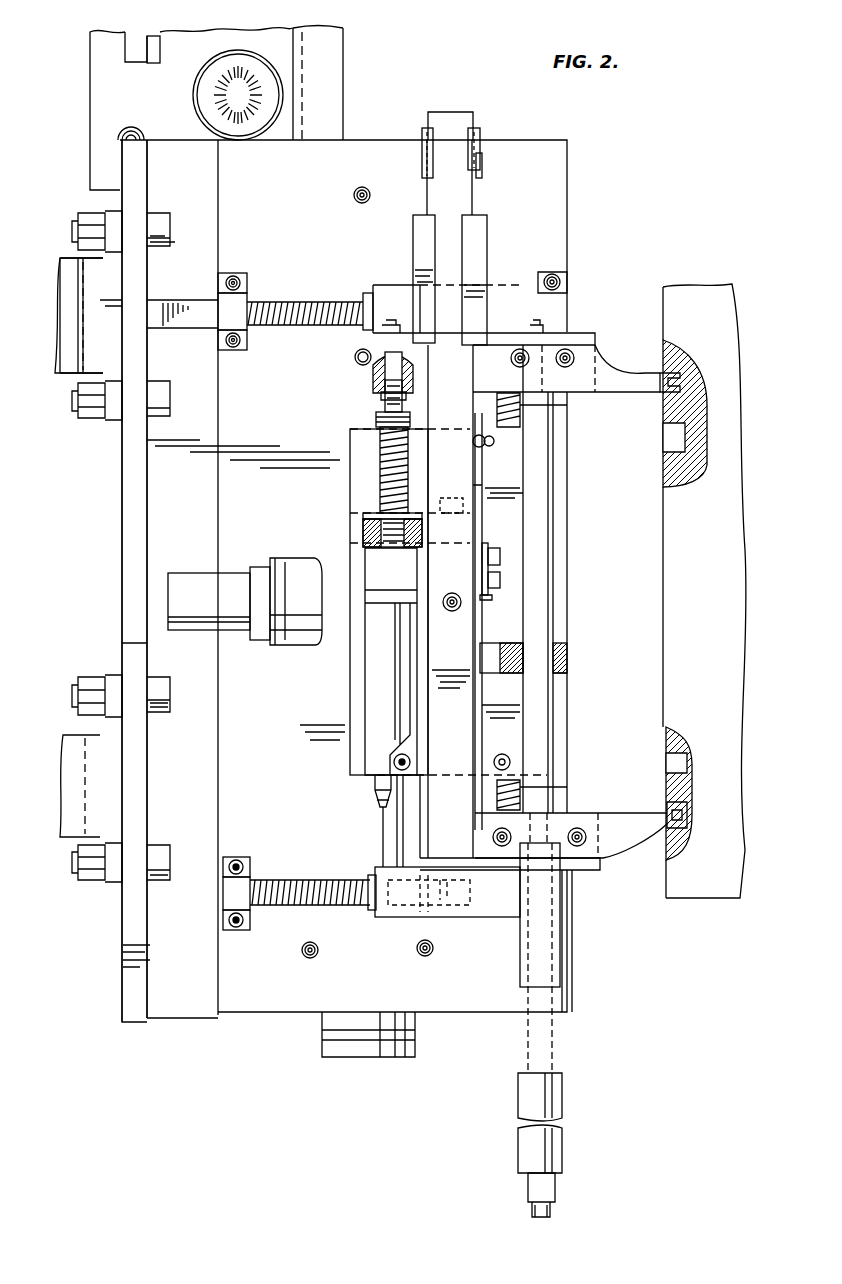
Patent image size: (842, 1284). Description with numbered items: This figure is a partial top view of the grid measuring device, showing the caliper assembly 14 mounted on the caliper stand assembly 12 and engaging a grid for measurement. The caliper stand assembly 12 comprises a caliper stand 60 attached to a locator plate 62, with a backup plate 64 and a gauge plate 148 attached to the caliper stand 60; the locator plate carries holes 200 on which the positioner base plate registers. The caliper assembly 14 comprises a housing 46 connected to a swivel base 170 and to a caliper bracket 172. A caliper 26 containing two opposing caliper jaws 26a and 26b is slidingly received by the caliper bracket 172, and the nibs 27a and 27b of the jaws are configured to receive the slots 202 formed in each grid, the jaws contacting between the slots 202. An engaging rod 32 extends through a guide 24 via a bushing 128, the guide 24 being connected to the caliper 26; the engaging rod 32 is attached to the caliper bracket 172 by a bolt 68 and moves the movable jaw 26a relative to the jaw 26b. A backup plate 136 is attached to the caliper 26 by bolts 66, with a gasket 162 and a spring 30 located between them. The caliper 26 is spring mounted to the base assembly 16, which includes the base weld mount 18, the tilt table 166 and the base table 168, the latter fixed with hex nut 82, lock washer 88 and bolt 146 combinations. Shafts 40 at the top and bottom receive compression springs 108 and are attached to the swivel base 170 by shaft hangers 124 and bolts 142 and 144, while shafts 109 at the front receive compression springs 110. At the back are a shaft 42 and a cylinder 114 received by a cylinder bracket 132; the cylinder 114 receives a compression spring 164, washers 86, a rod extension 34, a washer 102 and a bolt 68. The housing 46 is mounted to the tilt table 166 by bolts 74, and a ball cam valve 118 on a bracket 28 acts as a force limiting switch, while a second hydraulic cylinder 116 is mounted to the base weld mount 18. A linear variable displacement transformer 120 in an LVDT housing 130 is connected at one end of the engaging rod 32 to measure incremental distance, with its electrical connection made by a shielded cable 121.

The caliper stand assembly 12 is at (366, 50).
The caliper assembly 14 is at (622, 629).
The base assembly 16 is at (95, 909).
The base weld mount 18 is at (142, 922).
The guide 24 is at (566, 650).
The caliper 26 is at (474, 136).
The caliper jaw 26a is at (625, 827).
The caliper jaw 26b is at (612, 370).
The nib 27a is at (668, 812).
The nib 27b is at (668, 386).
The bracket 28 is at (187, 578).
The spring 30 is at (482, 466).
The engaging rod 32 is at (538, 518).
The rod extension 34 is at (381, 397).
The shaft 40 is at (273, 301).
The shaft 42 is at (388, 827).
The housing 46 is at (437, 913).
The caliper stand 60 is at (102, 91).
The locator plate 62 is at (332, 93).
The backup plate 64 is at (160, 48).
The bolt 66 is at (490, 547).
The bolt 68 is at (391, 322).
The bolt 74 is at (363, 189).
The hex nut 82 is at (90, 682).
The washer 86 is at (376, 424).
The lock washer 88 is at (93, 677).
The washer 102 is at (373, 372).
The compression spring 108 is at (320, 302).
The shaft 109 is at (495, 402).
The compression spring 110 is at (567, 406).
The cylinder 114 is at (380, 688).
The hydraulic cylinder 116 is at (370, 1047).
The ball cam valve 118 is at (287, 570).
The linear variable displacement transformer 120 is at (540, 1092).
The cable 121 is at (550, 1208).
The shaft hanger 124 is at (247, 338).
The bushing 128 is at (556, 673).
The LVDT housing 130 is at (562, 967).
The cylinder bracket 132 is at (363, 535).
The backup plate 136 is at (484, 594).
The bolt 142 is at (235, 272).
The bolt 144 is at (231, 928).
The bolt 146 is at (158, 686).
The gauge plate 148 is at (131, 42).
The gasket 162 is at (478, 563).
The compression spring 164 is at (380, 476).
The tilt table 166 is at (184, 1000).
The base table 168 is at (357, 655).
The swivel base 170 is at (567, 889).
The caliper bracket 172 is at (578, 333).
The hole 200 is at (212, 91).
The slot 202 is at (665, 416).